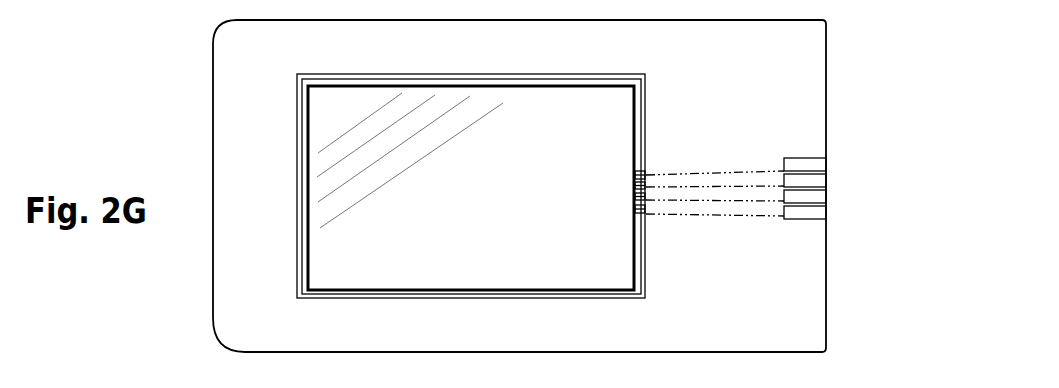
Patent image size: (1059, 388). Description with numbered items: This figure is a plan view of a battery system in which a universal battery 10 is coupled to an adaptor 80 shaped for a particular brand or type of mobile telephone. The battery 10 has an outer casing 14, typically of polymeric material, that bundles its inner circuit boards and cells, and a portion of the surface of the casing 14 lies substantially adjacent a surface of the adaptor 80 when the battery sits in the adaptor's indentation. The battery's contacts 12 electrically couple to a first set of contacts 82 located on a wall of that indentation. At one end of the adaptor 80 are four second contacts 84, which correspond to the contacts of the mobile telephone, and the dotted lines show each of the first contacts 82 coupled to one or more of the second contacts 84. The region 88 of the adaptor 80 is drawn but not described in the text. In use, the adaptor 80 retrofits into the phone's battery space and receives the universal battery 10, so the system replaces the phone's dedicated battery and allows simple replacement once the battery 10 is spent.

The universal battery 10 is at (299, 94).
The contacts 12 is at (636, 174).
The outer casing 14 is at (466, 206).
The adaptor 80 is at (212, 273).
The first set of contacts 82 is at (646, 177).
The second contacts 84 is at (784, 212).
The housing interior 88 is at (750, 318).